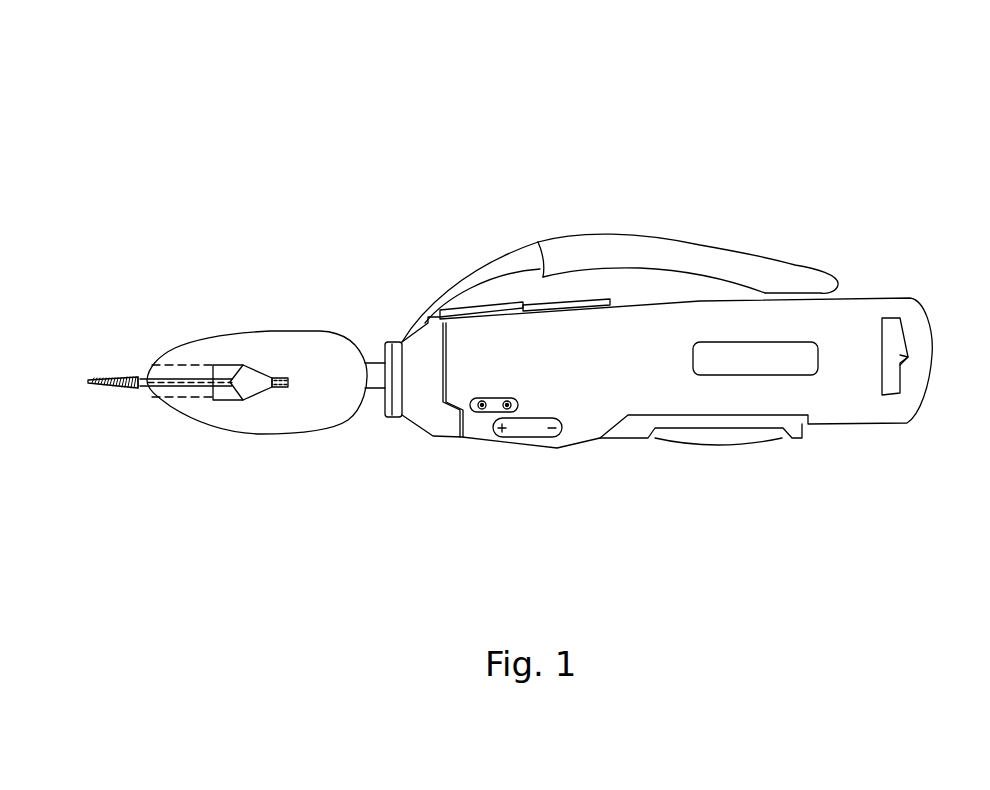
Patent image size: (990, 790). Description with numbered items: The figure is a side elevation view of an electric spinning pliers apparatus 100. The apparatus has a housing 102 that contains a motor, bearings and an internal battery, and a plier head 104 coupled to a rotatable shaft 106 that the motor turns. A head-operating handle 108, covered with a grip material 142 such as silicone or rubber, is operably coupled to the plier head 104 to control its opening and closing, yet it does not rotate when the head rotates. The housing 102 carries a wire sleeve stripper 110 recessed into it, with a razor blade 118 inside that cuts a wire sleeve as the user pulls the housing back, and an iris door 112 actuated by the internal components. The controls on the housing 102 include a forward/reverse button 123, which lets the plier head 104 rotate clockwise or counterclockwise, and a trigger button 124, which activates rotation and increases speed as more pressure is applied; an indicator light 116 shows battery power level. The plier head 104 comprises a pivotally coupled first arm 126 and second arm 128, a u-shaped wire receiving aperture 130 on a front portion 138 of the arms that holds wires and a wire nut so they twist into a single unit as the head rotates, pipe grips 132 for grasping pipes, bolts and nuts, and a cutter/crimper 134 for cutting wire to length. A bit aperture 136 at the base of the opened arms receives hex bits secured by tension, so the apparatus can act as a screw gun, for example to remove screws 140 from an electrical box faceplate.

The electric spinning pliers apparatus 100 is at (267, 130).
The housing 102 is at (840, 412).
The plier head 104 is at (323, 418).
The rotatable shaft 106 is at (375, 370).
The head-operating handle 108 is at (490, 270).
The wire sleeve stripper 110 is at (898, 335).
The iris door 112 is at (718, 437).
The indicator light 116 is at (493, 410).
The razor blade 118 is at (905, 364).
The forward/reverse button 123 is at (538, 432).
The trigger button 124 is at (777, 353).
The first arm 126 is at (195, 357).
The second arm 128 is at (168, 398).
The wire receiving aperture 130 is at (139, 392).
The pipe grips 132 is at (257, 370).
The cutter/crimper 134 is at (268, 380).
The bit aperture 136 is at (282, 368).
The front portion 138 is at (143, 346).
The screws 140 is at (92, 382).
The grip material 142 is at (692, 246).